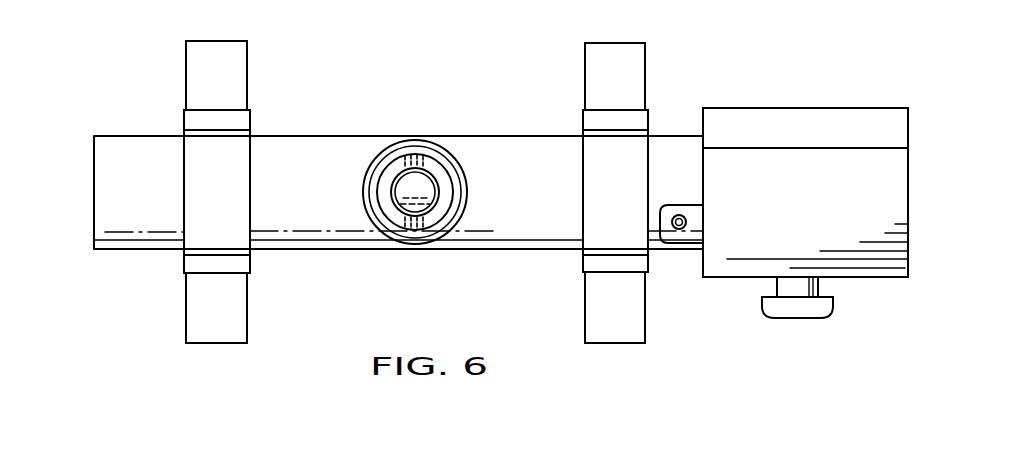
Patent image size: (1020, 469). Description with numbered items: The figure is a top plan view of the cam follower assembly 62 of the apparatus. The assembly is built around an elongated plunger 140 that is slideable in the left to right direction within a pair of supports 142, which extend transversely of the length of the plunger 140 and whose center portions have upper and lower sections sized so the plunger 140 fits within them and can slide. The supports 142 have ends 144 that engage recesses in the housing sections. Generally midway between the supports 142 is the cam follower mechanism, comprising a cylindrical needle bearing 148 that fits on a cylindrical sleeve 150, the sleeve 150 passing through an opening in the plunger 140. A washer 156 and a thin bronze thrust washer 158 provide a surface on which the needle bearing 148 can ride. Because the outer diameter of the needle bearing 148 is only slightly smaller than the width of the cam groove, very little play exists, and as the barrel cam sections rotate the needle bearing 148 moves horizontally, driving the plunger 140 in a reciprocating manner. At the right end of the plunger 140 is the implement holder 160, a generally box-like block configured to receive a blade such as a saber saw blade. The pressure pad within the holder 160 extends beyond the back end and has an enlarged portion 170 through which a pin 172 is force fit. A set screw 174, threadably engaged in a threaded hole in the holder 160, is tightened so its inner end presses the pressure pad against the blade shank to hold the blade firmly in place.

The cam follower assembly 62 is at (829, 188).
The elongated plunger 140 is at (131, 210).
The supports 142 is at (223, 163).
The ends 144 is at (208, 74).
The cylindrical needle bearing 148 is at (443, 175).
The cylindrical sleeve 150 is at (411, 190).
The washer 156 is at (455, 228).
The thin bronze thrust washer 158 is at (385, 228).
The implement holder 160 is at (915, 180).
The enlarged portion 170 is at (678, 232).
The pin 172 is at (678, 214).
The set screw 174 is at (833, 308).